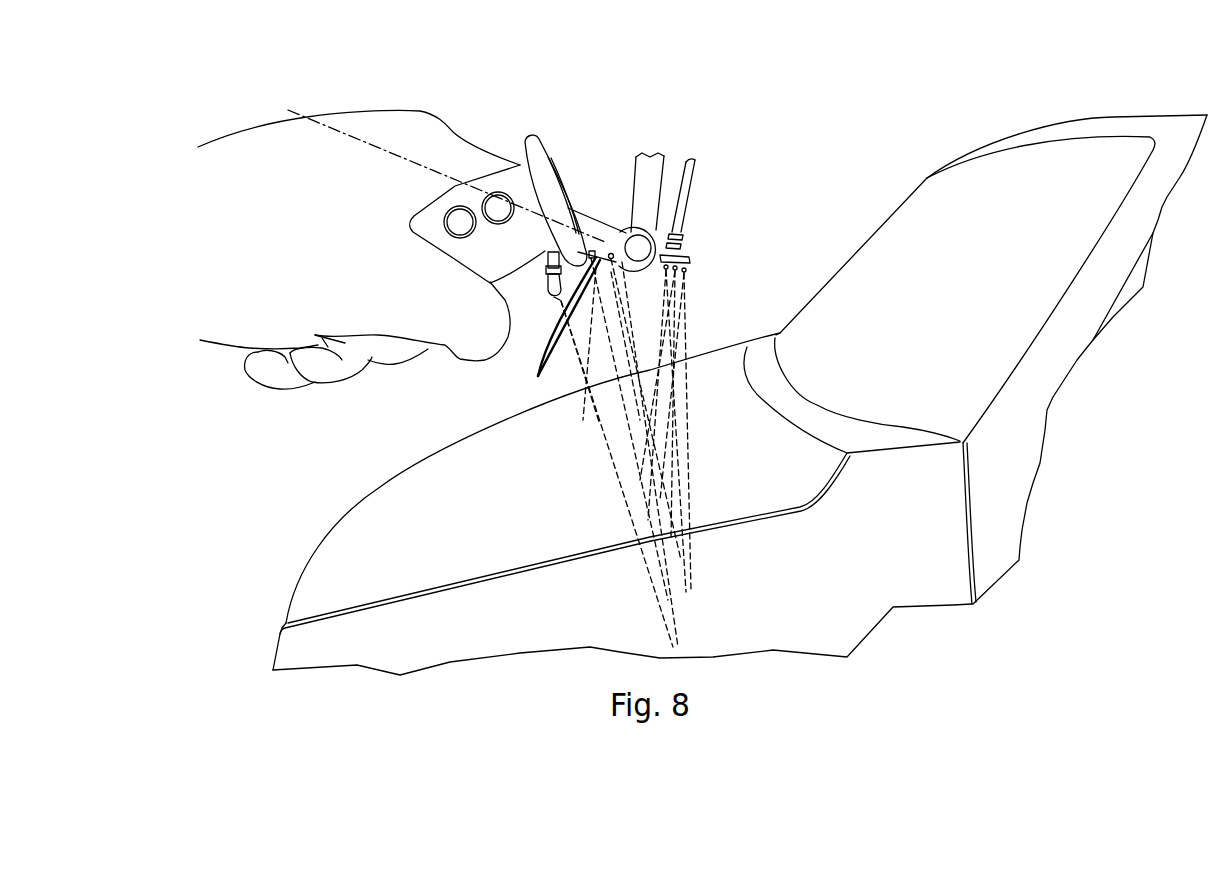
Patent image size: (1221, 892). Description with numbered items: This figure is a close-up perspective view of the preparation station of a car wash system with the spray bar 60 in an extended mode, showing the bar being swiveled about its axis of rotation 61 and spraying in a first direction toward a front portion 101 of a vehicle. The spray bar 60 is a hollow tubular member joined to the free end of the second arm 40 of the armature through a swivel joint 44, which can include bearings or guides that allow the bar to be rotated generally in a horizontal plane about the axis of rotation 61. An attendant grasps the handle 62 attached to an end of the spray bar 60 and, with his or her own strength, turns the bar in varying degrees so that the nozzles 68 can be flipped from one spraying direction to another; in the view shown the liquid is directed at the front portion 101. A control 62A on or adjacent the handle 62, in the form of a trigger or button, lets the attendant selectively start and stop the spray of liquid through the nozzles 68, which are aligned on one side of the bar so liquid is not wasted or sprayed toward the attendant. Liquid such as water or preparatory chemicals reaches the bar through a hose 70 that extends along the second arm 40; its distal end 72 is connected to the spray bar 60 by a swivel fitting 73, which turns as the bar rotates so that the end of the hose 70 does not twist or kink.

The second arm 40 is at (658, 203).
The swivel joint 44 is at (647, 232).
The spray bar 60 is at (603, 232).
The axis of rotation 61 is at (393, 153).
The handle 62 is at (555, 166).
The control 62A is at (460, 208).
The nozzles 68 is at (562, 300).
The hose 70 is at (697, 161).
The distal end of the hose 72 is at (682, 229).
The swivel fitting 73 is at (673, 259).
The front portion 101 is at (785, 482).